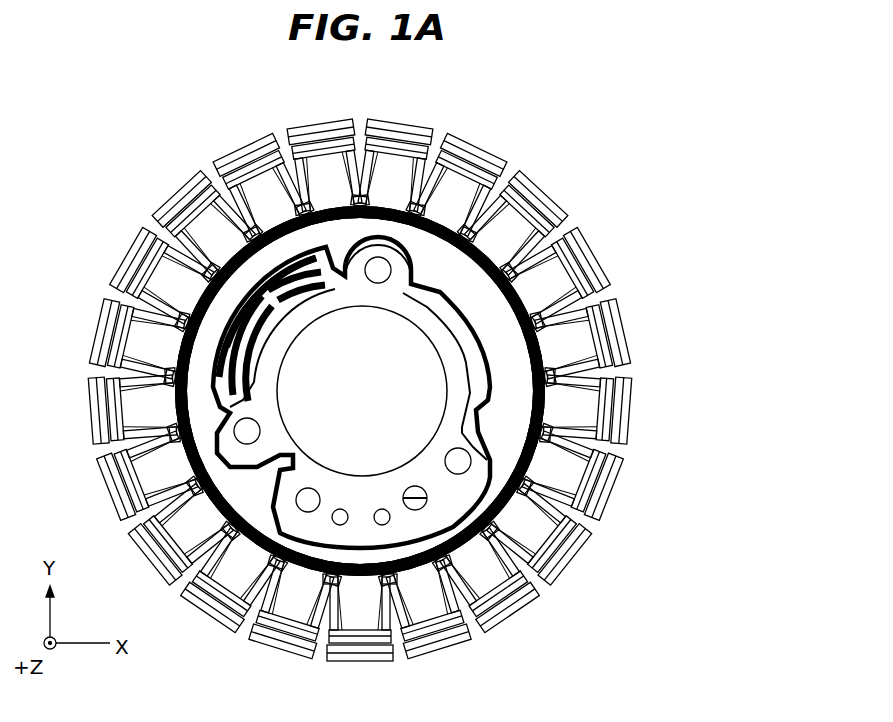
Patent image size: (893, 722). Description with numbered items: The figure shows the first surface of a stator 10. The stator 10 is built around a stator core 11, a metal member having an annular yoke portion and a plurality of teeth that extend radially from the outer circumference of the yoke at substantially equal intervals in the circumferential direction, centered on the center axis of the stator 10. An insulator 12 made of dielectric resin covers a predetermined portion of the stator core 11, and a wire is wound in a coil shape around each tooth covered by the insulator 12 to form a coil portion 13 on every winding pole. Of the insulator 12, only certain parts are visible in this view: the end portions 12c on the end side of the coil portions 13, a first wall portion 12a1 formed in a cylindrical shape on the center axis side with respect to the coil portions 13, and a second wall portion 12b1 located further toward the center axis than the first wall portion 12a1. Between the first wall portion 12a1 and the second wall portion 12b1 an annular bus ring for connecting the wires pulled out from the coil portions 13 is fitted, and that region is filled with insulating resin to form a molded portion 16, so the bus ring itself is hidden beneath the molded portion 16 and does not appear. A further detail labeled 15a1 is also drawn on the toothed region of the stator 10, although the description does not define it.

The stator 10 is at (371, 96).
The stator core 11 is at (318, 528).
The insulator 12 is at (440, 390).
The first wall portion 12a1 is at (547, 338).
The second wall portion 12b1 is at (493, 385).
The end portions 12c is at (597, 258).
The coil portion 13 is at (572, 470).
The insulator portion 15a1 is at (500, 250).
The molded portion 16 is at (440, 263).